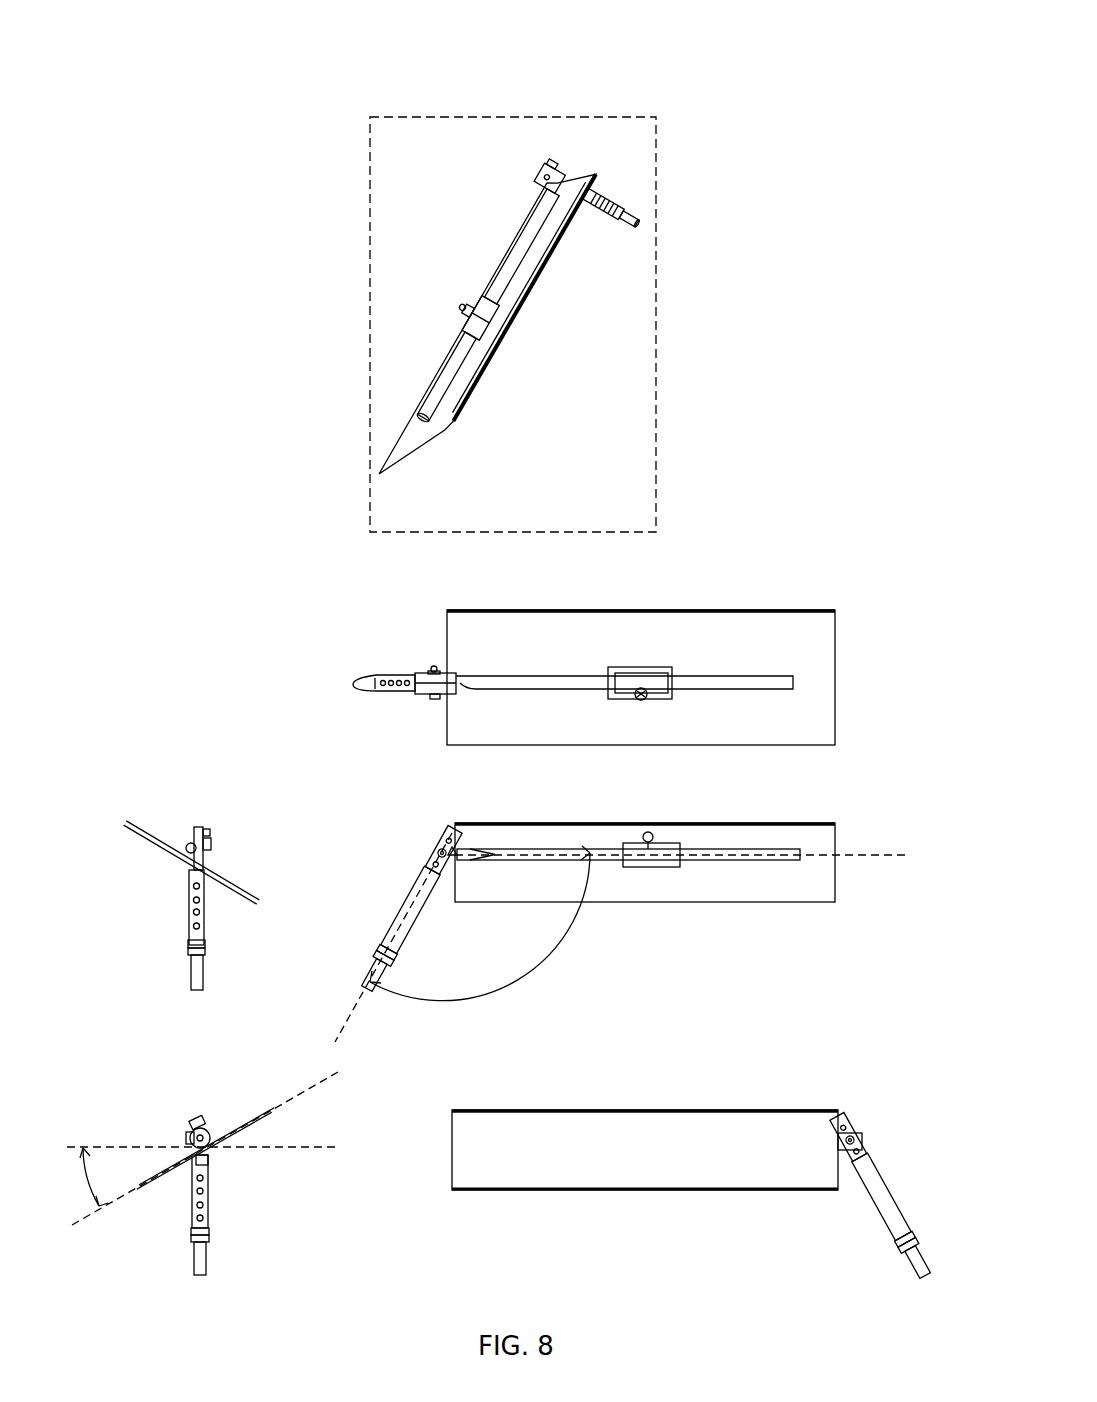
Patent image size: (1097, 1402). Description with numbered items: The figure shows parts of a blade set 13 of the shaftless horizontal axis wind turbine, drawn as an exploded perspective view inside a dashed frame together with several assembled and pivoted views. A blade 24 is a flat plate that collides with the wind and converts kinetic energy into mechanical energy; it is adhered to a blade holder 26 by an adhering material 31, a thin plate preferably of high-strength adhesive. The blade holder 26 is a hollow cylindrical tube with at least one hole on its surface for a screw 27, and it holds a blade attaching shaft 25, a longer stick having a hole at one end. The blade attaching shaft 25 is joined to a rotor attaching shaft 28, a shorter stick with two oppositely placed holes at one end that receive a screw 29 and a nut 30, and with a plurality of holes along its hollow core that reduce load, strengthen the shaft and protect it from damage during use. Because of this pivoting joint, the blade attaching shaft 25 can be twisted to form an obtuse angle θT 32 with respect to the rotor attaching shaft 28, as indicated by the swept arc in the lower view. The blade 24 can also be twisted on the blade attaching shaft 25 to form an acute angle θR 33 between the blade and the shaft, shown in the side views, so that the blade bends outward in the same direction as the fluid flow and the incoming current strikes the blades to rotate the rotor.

The blade set 13 is at (500, 117).
The blade 24 is at (812, 647).
The blade attaching shaft 25 is at (765, 684).
The blade holder 26 is at (670, 693).
The screw 27 is at (641, 700).
The rotor attaching shaft 28 is at (395, 694).
The screw 29 is at (432, 700).
The nut 30 is at (428, 669).
The adhering material 31 is at (648, 668).
The obtuse angle θT 32 is at (510, 955).
The acute angle θR 33 is at (108, 1192).